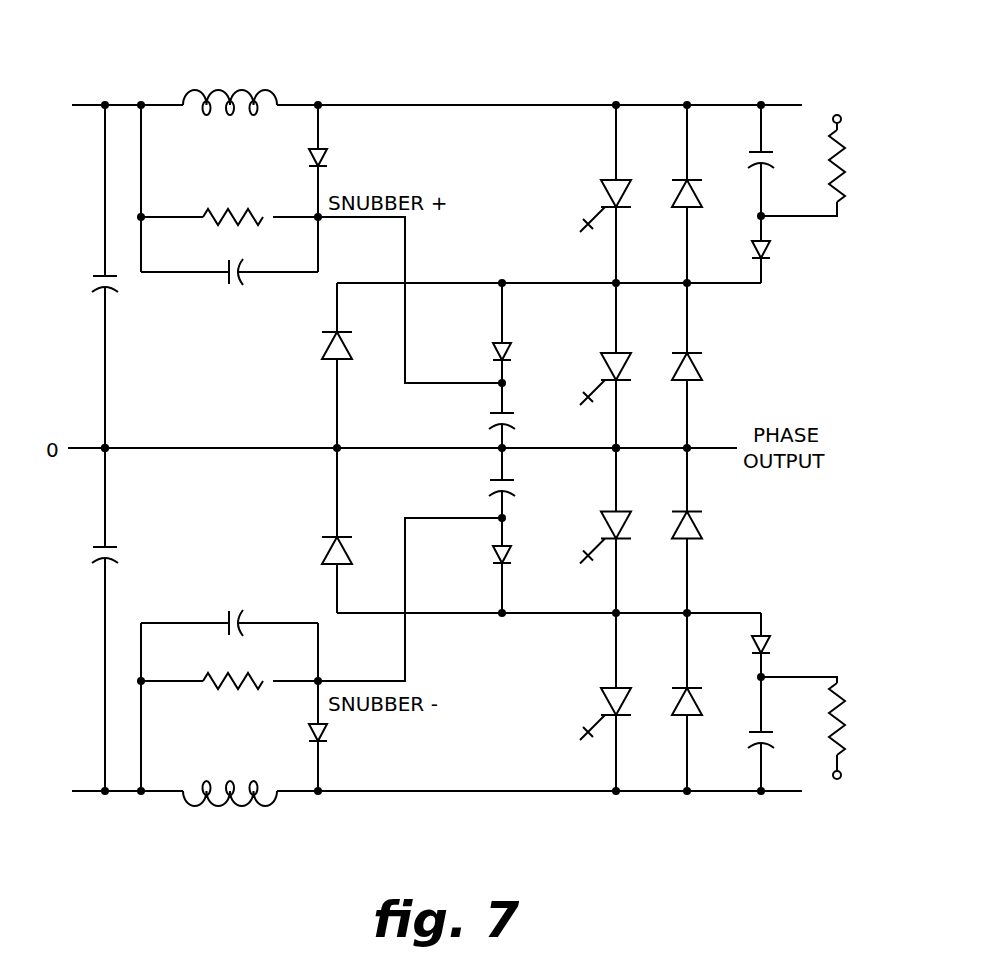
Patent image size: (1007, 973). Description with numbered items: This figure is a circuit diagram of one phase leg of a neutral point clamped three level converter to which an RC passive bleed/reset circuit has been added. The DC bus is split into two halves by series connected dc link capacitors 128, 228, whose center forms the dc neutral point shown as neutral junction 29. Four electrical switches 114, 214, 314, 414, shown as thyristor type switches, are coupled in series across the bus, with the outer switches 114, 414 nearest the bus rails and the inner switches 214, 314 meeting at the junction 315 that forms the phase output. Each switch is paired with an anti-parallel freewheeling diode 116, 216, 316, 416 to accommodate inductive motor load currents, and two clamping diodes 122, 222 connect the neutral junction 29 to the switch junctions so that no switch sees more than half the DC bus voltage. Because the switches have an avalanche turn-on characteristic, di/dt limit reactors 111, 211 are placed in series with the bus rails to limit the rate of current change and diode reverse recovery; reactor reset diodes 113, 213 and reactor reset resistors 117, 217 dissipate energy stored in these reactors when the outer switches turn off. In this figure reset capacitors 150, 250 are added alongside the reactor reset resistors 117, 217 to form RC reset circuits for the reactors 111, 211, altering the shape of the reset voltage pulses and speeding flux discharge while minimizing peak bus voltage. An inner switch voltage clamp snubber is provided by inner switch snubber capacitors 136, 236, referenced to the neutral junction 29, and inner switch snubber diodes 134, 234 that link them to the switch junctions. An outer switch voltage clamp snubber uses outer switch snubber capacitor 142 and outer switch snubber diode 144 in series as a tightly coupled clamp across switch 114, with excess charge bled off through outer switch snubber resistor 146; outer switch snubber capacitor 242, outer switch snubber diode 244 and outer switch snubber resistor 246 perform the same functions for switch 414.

The di/dt limit reactor 111 is at (240, 91).
The di/dt limit reactor 211 is at (222, 806).
The reactor reset diode 113 is at (307, 157).
The reactor reset diode 213 is at (307, 731).
The reactor reset resistor 117 is at (207, 212).
The reactor reset resistor 217 is at (208, 686).
The reset capacitor 150 is at (229, 284).
The reset capacitor 250 is at (228, 620).
The dc link capacitor 128 is at (118, 290).
The dc link capacitor 228 is at (120, 546).
The neutral junction 29 is at (105, 448).
The clamping diode 122 is at (330, 345).
The clamping diode 222 is at (330, 553).
The inner switch snubber diode 134 is at (512, 352).
The inner switch snubber capacitor 136 is at (512, 418).
The inner switch snubber capacitor 236 is at (512, 478).
The inner switch snubber diode 234 is at (512, 558).
The electrical switch 114 is at (603, 190).
The freewheeling diode 116 is at (680, 210).
The electrical switch 214 is at (605, 368).
The freewheeling diode 216 is at (688, 354).
The electrical switch 314 is at (605, 520).
The freewheeling diode 316 is at (688, 512).
The electrical switch 414 is at (603, 700).
The freewheeling diode 416 is at (680, 720).
The junction 315 is at (616, 448).
The outer switch snubber capacitor 142 is at (772, 152).
The outer switch snubber diode 144 is at (770, 252).
The outer switch snubber resistor 146 is at (838, 200).
The outer switch snubber diode 244 is at (770, 645).
The outer switch snubber capacitor 242 is at (772, 735).
The outer switch snubber resistor 246 is at (838, 752).